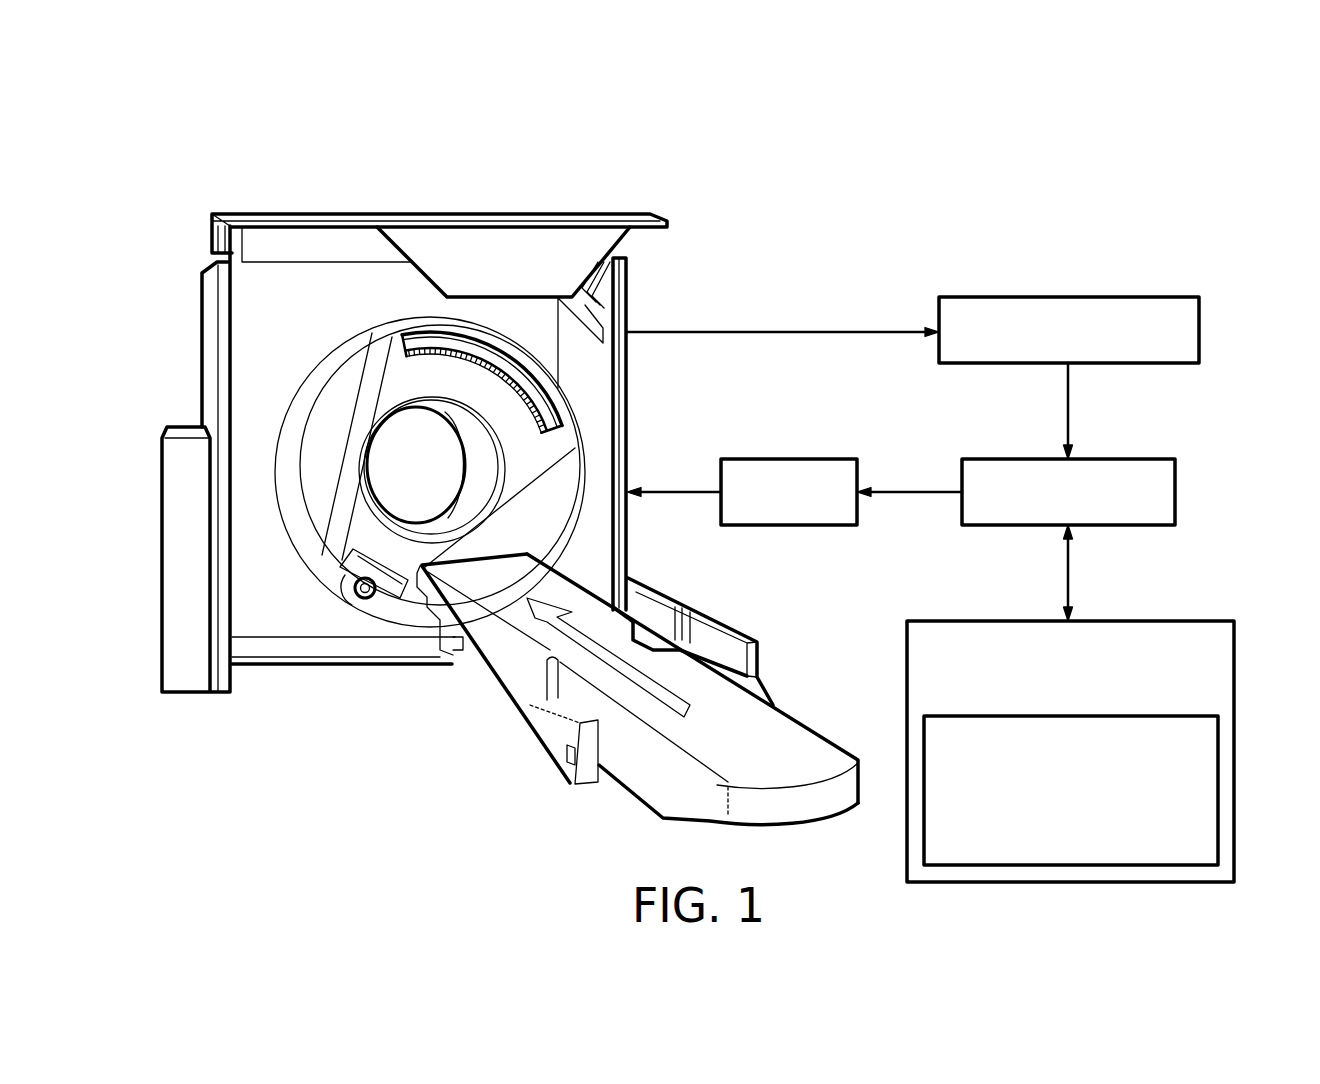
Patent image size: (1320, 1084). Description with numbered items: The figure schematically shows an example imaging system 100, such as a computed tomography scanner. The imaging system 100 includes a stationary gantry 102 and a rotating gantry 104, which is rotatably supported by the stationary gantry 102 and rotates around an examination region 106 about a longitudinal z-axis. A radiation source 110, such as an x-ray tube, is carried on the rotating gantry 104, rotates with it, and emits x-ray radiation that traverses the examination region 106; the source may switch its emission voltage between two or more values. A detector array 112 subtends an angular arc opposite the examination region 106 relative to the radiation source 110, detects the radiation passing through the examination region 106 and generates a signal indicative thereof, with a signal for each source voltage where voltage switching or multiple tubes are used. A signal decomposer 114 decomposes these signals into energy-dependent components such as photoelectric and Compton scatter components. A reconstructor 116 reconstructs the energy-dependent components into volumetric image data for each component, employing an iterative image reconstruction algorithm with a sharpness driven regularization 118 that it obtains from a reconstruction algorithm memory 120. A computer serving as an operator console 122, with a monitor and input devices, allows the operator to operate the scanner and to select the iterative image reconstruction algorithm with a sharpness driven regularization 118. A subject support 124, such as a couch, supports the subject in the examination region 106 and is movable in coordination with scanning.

The imaging system 100 is at (241, 190).
The stationary gantry 102 is at (222, 338).
The rotating gantry 104 is at (385, 376).
The examination region 106 is at (440, 474).
The radiation source 110 is at (360, 603).
The detector array 112 is at (498, 357).
The signal decomposer 114 is at (1067, 295).
The reconstructor 116 is at (1133, 458).
The iterative image reconstruction algorithm with a sharpness driven regularization 118 is at (1218, 796).
The reconstruction algorithm memory 120 is at (1133, 620).
The operator console 122 is at (792, 458).
The subject support 124 is at (803, 740).